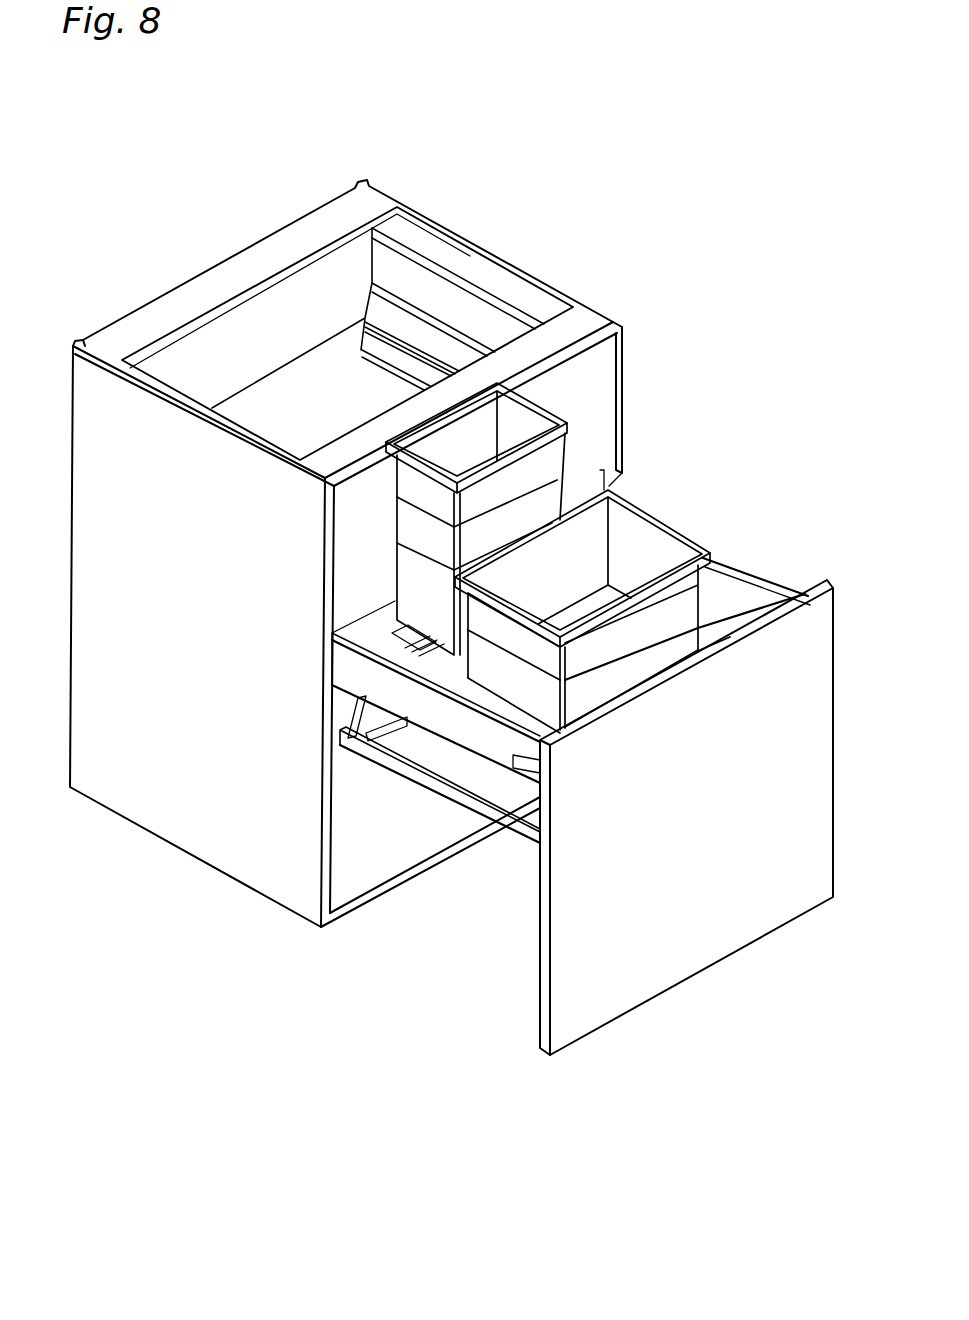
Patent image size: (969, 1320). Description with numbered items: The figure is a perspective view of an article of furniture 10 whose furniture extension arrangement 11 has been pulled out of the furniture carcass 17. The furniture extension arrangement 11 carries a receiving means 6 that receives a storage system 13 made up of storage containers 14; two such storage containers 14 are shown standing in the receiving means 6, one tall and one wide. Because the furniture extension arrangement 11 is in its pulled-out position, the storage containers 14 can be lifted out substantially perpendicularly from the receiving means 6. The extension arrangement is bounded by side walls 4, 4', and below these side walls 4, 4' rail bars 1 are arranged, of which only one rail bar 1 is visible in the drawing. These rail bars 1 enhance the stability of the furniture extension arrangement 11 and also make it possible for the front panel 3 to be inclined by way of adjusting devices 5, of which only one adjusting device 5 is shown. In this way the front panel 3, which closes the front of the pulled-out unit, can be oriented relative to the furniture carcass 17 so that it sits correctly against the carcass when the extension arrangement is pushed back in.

The rail bar 1 is at (383, 755).
The front panel 3 is at (718, 838).
The side wall 4 is at (436, 775).
The side wall 4' is at (695, 573).
The adjusting device 5 is at (528, 850).
The receiving means 6 is at (505, 720).
The article of furniture 10 is at (613, 290).
The furniture extension arrangement 11 is at (472, 1013).
The storage system 13 is at (680, 483).
The storage container 14 is at (525, 544).
The furniture carcass 17 is at (208, 670).